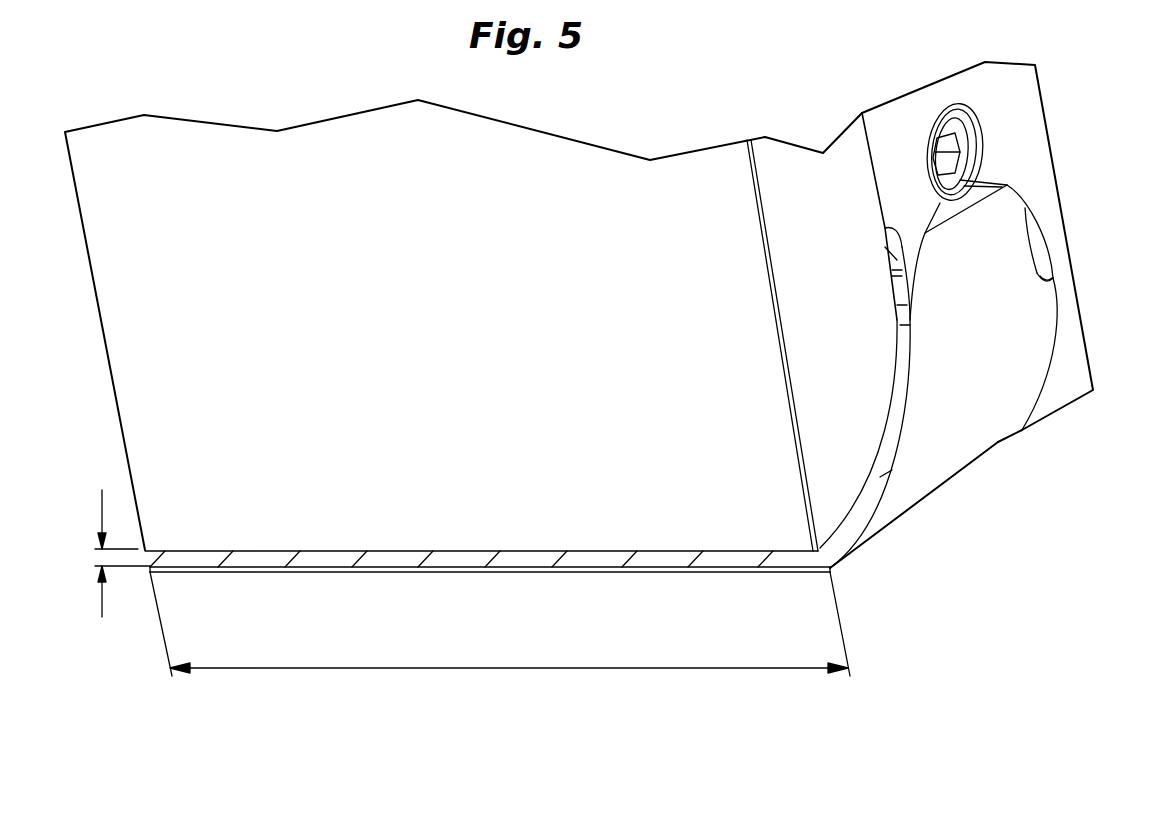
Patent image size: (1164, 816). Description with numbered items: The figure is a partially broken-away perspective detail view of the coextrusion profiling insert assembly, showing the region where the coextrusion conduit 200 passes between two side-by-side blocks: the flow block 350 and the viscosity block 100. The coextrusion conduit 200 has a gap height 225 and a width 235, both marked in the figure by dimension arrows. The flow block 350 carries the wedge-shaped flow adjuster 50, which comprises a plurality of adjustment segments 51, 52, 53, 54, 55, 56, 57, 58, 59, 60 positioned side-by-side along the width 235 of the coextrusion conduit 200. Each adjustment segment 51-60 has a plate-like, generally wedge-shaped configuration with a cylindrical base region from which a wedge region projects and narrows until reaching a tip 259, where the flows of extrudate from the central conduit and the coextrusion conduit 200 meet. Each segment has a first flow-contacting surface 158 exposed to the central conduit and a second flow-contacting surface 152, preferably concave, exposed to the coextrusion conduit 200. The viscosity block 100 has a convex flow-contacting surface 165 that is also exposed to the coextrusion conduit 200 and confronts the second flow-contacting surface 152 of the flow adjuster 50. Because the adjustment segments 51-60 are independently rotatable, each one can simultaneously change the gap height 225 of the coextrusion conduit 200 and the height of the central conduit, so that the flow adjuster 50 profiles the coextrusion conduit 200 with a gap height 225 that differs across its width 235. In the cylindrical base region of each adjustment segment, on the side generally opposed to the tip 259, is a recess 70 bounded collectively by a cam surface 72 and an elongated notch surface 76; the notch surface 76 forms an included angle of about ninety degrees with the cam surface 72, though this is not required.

The wedge-shaped flow adjuster 50 is at (1019, 455).
The adjustment segment 51 is at (183, 572).
The adjustment segment 52 is at (253, 570).
The adjustment segment 53 is at (323, 570).
The adjustment segment 54 is at (388, 570).
The adjustment segment 55 is at (452, 570).
The adjustment segment 56 is at (508, 570).
The adjustment segment 57 is at (585, 570).
The adjustment segment 58 is at (655, 570).
The adjustment segment 59 is at (720, 570).
The adjustment segment 60 is at (773, 572).
The recess 70 is at (1042, 254).
The cam surface 72 is at (1043, 277).
The notch surface 76 is at (1033, 242).
The viscosity block 100 is at (895, 120).
The second flow-contacting surface 152 is at (893, 455).
The first flow-contacting surface 158 is at (922, 525).
The convex flow-contacting surface 165 is at (880, 476).
The coextrusion conduit 200 is at (858, 522).
The gap height 225 is at (116, 569).
The width 235 is at (467, 670).
The tip 259 is at (840, 570).
The flow block 350 is at (803, 158).